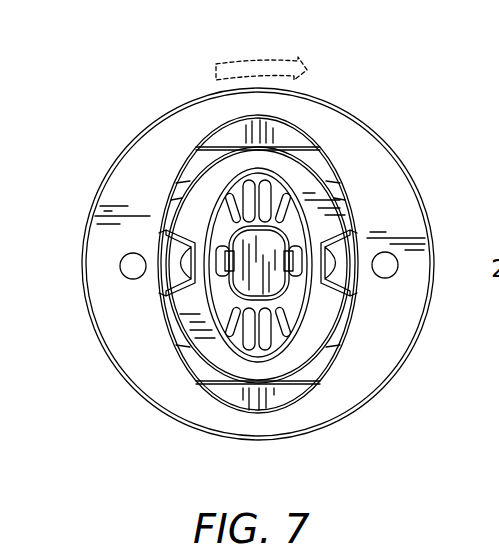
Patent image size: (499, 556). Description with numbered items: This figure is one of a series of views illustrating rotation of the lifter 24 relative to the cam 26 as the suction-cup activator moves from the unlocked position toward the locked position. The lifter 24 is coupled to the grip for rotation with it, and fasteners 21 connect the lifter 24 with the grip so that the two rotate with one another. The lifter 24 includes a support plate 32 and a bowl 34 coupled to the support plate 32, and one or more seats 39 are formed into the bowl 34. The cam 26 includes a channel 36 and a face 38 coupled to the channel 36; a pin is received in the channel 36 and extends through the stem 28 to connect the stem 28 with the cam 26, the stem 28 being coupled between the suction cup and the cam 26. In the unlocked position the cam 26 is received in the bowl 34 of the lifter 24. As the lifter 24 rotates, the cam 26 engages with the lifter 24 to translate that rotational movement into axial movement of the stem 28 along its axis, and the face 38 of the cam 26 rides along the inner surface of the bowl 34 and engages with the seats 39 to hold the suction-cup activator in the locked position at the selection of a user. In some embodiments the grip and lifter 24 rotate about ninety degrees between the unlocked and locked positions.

The fasteners 21 is at (121, 272).
The lifter 24 is at (127, 141).
The cam 26 is at (292, 186).
The stem 28 is at (259, 280).
The support plate 32 is at (383, 137).
The bowl 34 is at (203, 211).
The channel 36 is at (236, 237).
The face 38 is at (299, 338).
The seats 39 is at (367, 280).